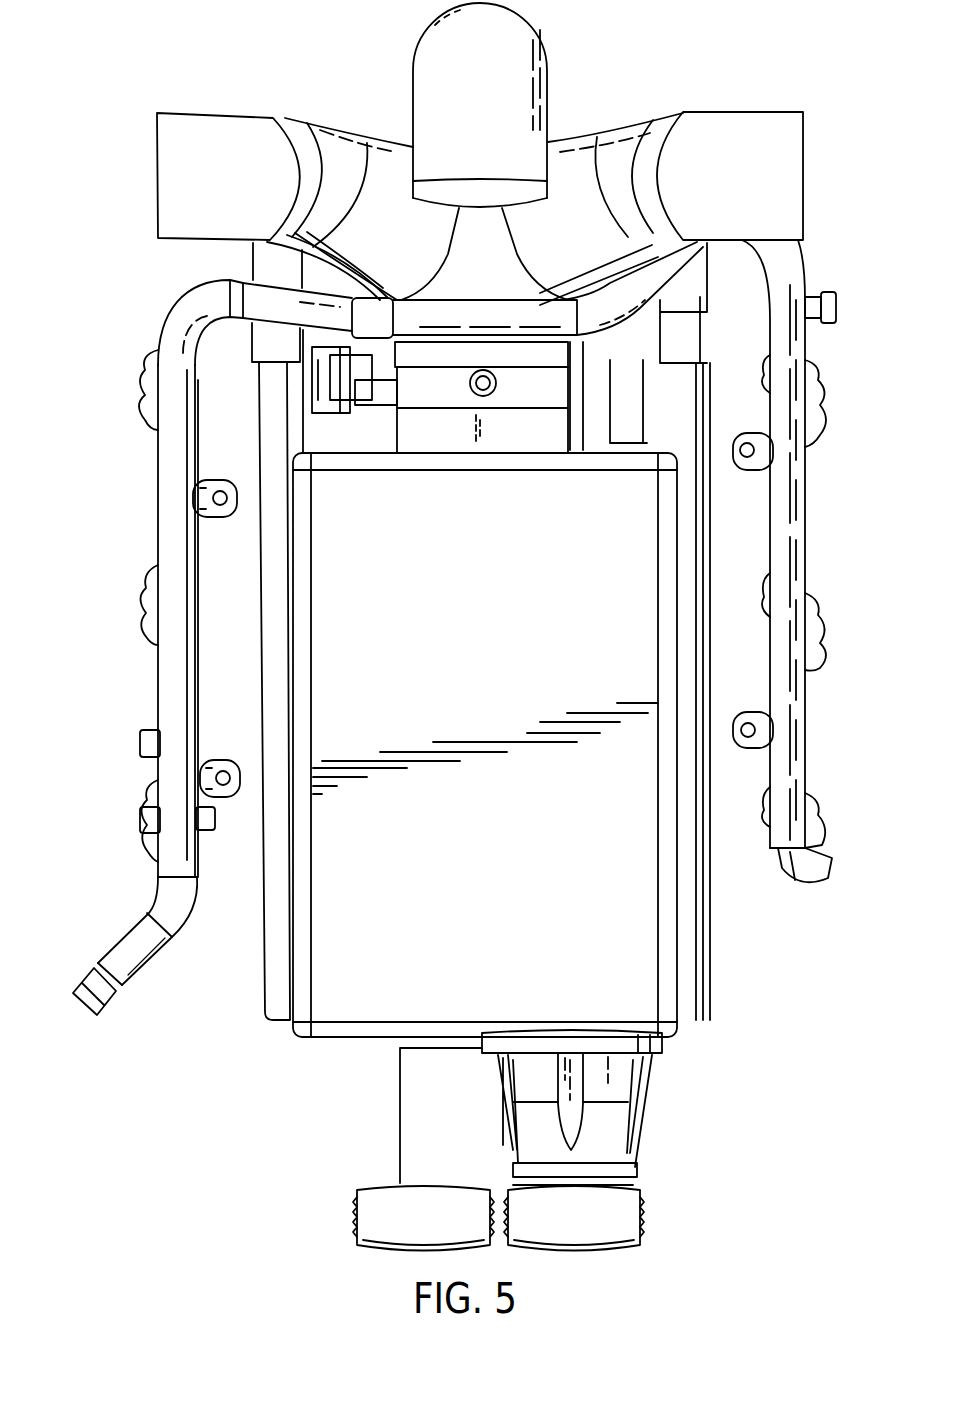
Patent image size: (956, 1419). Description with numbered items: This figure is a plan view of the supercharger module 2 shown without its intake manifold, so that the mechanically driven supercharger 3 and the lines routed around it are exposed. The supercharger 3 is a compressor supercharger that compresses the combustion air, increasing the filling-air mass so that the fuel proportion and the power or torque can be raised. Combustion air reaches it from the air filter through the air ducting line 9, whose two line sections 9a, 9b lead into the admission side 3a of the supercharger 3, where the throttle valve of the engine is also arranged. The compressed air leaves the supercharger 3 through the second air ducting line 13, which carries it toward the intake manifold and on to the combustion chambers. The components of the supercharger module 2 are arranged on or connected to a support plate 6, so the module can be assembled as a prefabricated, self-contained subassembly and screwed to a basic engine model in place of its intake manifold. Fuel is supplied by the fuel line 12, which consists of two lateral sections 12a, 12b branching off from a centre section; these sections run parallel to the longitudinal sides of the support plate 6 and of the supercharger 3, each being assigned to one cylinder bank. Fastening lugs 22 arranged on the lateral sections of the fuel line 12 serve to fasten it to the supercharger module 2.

The supercharger module 2 is at (625, 80).
The air ducting line 9 is at (318, 118).
The line section 9a is at (748, 186).
The line section 9b is at (233, 186).
The second air ducting line 13 is at (493, 113).
The fuel line 12 is at (150, 480).
The fuel line section 12a is at (172, 536).
The fuel line section 12b is at (793, 510).
The supercharger 3 is at (497, 732).
The admission side 3a is at (534, 382).
The support plate 6 is at (280, 937).
The fastening lug 22 is at (212, 767).